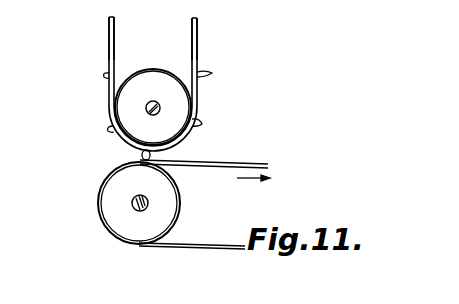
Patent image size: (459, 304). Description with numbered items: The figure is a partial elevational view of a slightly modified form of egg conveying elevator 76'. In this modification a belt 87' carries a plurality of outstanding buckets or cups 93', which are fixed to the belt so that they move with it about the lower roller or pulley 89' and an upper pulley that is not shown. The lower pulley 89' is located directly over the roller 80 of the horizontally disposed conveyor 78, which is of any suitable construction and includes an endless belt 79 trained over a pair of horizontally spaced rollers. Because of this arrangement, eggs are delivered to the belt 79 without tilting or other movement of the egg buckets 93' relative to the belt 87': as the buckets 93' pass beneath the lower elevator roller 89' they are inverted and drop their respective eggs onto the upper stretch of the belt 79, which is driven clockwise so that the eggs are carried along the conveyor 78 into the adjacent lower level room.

The elevator 76' is at (115, 84).
The belt 87' is at (154, 30).
The lower roller or pulley 89' is at (113, 107).
The buckets or cups 93' is at (246, 63).
The endless belt 79 is at (268, 165).
The roller 80 is at (138, 212).
The conveyor 78 is at (206, 246).